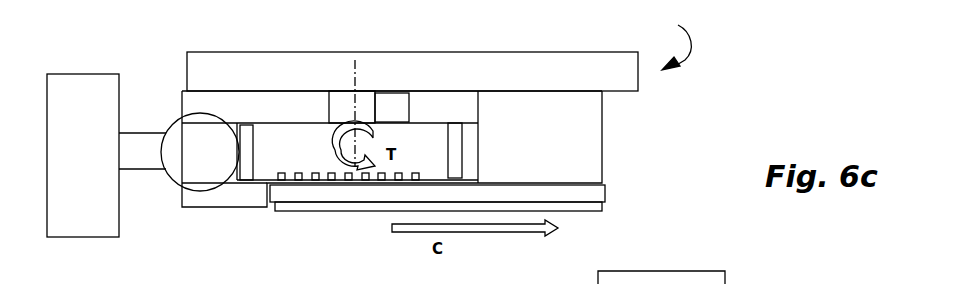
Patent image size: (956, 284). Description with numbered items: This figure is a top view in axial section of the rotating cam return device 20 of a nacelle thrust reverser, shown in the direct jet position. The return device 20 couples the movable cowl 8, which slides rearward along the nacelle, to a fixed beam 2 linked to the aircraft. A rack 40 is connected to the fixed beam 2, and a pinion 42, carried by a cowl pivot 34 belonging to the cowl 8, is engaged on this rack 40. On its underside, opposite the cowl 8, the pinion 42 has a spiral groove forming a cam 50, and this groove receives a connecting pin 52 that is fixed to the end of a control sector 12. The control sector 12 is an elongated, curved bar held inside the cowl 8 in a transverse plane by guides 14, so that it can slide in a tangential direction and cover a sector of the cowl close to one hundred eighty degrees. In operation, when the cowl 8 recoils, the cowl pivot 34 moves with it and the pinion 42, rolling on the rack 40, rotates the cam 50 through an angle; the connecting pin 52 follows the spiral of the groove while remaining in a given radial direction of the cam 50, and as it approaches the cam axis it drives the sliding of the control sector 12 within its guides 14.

The fixed beam 2 is at (120, 225).
The movable cowl 8 is at (512, 51).
The control sector 12 is at (606, 190).
The guides 14 is at (587, 212).
The return device 20 is at (671, 45).
The cowl pivot 34 is at (355, 92).
The rack 40 is at (175, 180).
The pinion 42 is at (462, 133).
The cam 50 is at (378, 178).
The connecting pin 52 is at (348, 217).